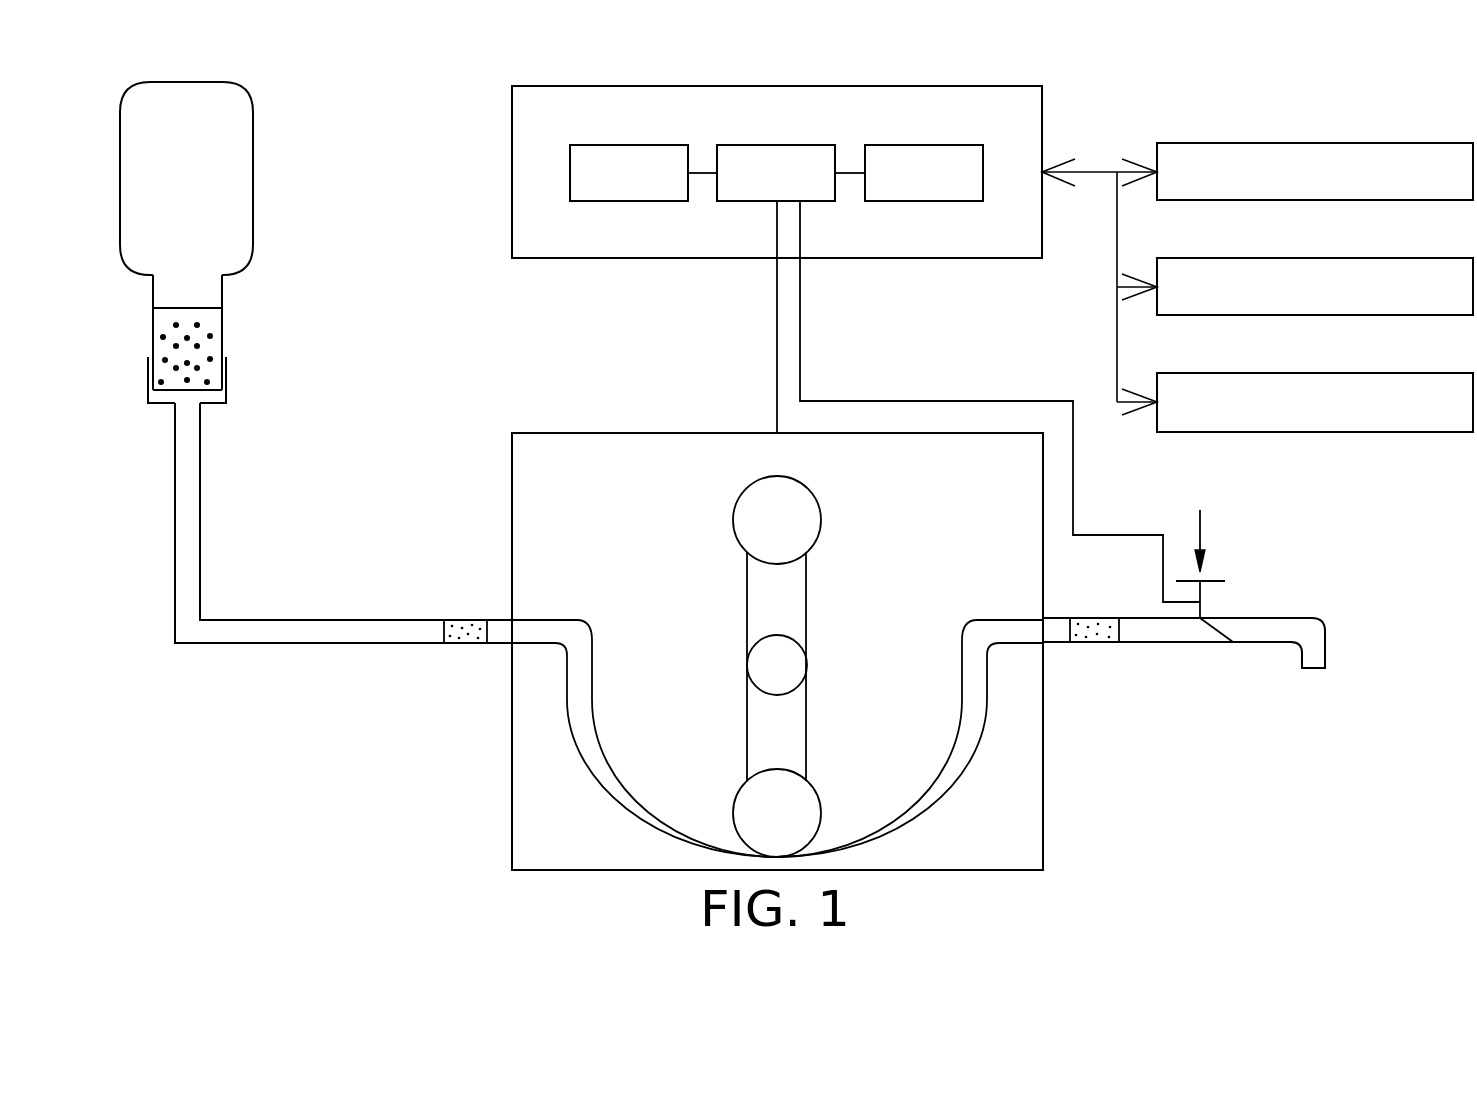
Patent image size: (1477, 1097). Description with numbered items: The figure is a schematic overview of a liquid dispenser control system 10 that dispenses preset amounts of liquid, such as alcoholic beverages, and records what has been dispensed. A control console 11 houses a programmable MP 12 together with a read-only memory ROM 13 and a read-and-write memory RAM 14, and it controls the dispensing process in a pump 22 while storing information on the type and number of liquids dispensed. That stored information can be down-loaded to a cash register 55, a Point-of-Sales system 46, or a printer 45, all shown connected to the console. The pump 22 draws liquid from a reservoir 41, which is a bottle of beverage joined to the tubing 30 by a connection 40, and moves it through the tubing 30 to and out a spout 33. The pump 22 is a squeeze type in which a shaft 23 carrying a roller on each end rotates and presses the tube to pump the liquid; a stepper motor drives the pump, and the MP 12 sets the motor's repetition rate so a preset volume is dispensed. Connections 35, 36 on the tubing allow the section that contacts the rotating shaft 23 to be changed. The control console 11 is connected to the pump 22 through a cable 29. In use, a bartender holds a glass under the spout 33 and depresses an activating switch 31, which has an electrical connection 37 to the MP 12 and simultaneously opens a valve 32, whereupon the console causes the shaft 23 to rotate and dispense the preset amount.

The liquid dispenser control system 10 is at (305, 881).
The control console 11 is at (1020, 244).
The MP 12 is at (756, 201).
The ROM 13 is at (930, 201).
The RAM 14 is at (633, 201).
The pump 22 is at (1021, 816).
The shaft 23 is at (806, 624).
The cable 29 is at (777, 362).
The tubing 30 is at (273, 643).
The activating switch 31 is at (1200, 595).
The valve 32 is at (1217, 642).
The spout 33 is at (1313, 668).
The connection 35 is at (1088, 642).
The connection 36 is at (465, 643).
The electrical connection 37 is at (1088, 535).
The connection 40 is at (222, 343).
The reservoir 41 is at (253, 156).
The printer 45 is at (1307, 373).
The Point-of-Sales system 46 is at (1307, 258).
The cash register 55 is at (1307, 143).